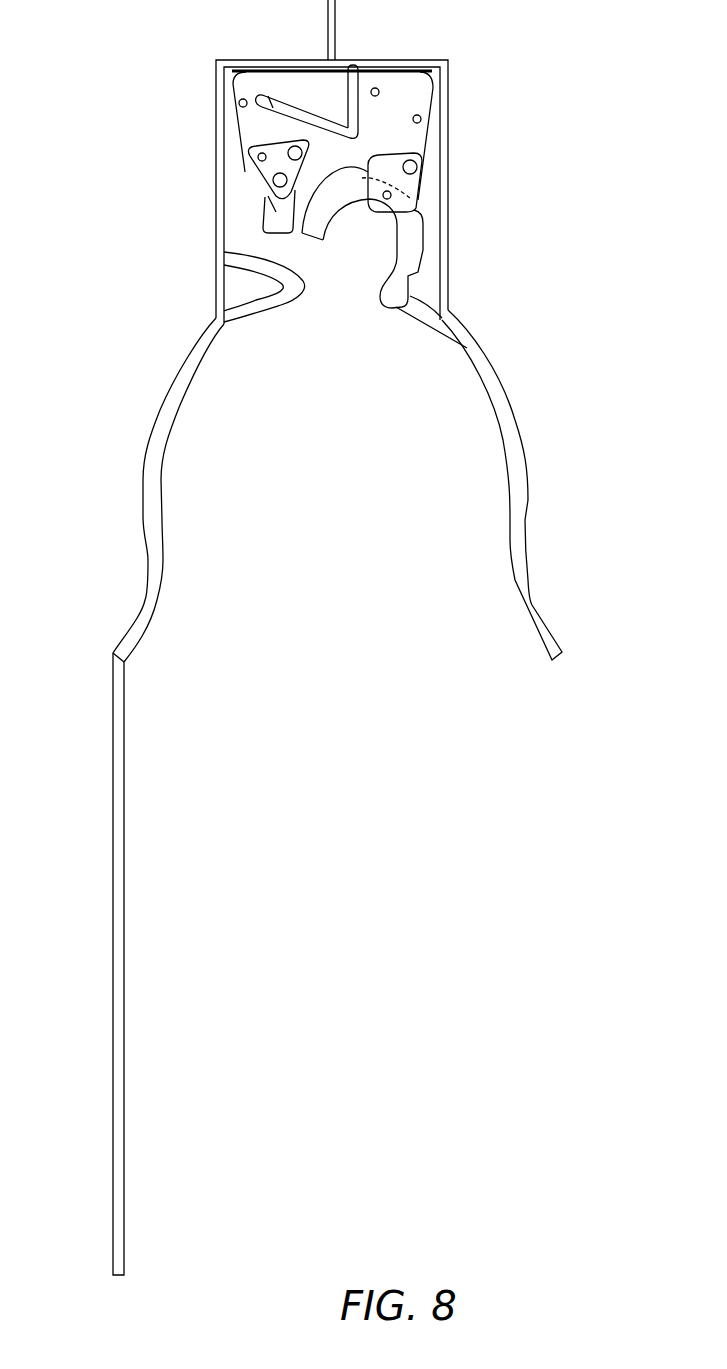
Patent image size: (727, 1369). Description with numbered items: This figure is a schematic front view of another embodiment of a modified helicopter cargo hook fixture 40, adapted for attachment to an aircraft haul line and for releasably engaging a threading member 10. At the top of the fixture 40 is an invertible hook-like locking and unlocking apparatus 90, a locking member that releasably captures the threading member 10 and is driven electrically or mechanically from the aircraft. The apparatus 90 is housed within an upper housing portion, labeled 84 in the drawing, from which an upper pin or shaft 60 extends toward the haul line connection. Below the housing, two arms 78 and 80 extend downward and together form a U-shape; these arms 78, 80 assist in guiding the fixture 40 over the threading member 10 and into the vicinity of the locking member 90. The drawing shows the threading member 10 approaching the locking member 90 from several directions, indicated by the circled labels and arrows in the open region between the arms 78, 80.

The threading member 10 is at (253, 346).
The fixture 40 is at (118, 360).
The actuator pin 60 is at (338, 28).
The arm 78 is at (143, 483).
The arm 80 is at (528, 477).
The housing 84 is at (451, 171).
The invertible hook-like locking and unlocking apparatus 90 is at (434, 232).